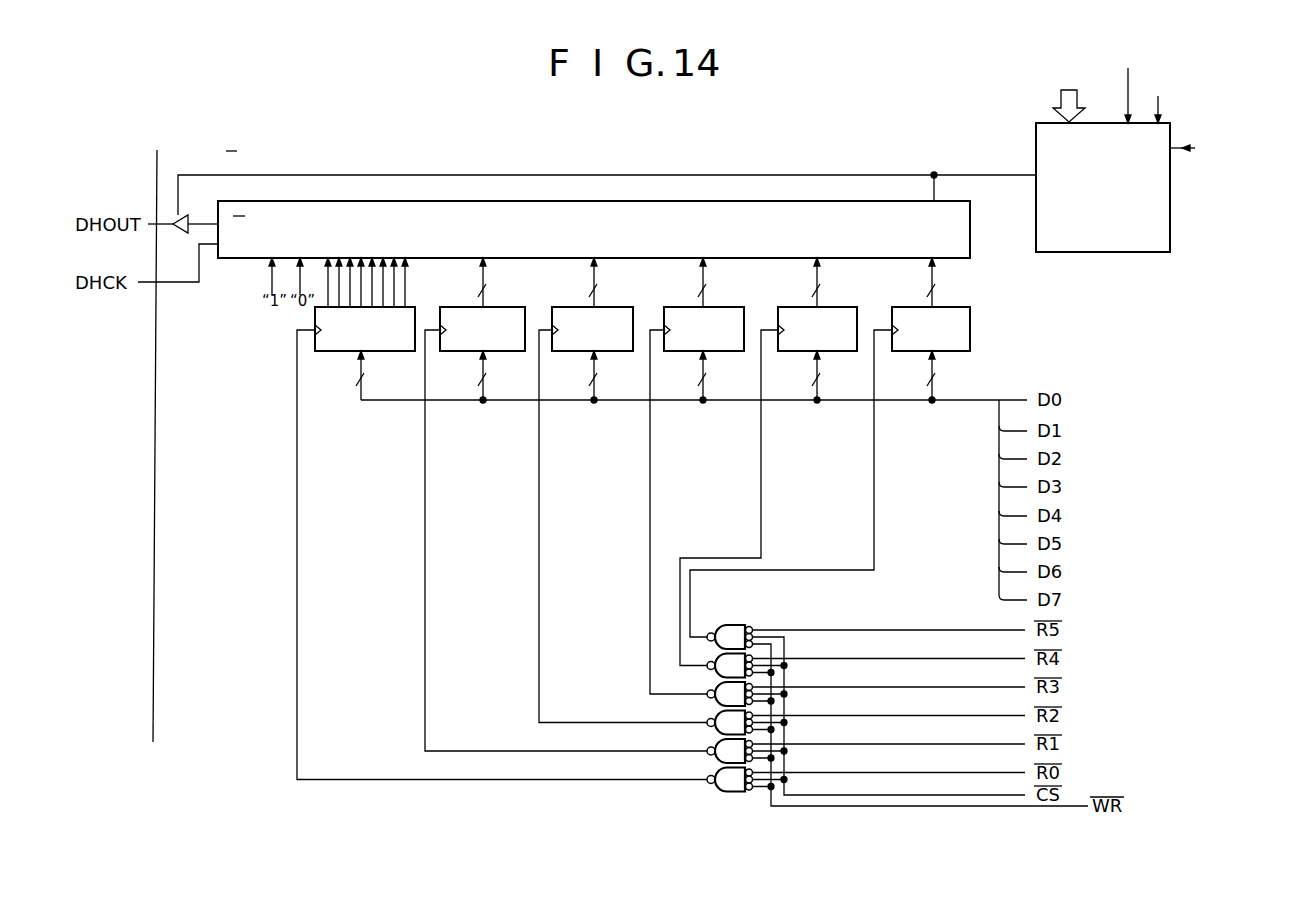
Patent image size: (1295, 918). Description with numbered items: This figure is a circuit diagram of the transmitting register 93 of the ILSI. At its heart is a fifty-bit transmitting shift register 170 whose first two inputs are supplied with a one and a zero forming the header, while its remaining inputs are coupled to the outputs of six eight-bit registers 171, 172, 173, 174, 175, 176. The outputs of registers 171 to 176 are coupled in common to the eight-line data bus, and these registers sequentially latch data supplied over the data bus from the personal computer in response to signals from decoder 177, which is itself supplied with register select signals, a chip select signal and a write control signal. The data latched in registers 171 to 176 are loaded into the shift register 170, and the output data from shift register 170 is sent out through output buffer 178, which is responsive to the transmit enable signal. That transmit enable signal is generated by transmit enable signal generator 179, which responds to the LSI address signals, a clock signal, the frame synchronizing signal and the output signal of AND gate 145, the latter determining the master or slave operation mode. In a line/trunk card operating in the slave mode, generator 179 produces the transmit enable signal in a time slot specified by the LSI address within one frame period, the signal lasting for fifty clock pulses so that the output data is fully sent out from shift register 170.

The transmitting register 93 is at (428, 167).
The 50-bit transmitting shift register 170 is at (828, 208).
The eight-bit register 171 is at (332, 353).
The eight-bit register 172 is at (457, 353).
The eight-bit register 173 is at (569, 353).
The eight-bit register 174 is at (681, 353).
The eight-bit register 175 is at (795, 353).
The eight-bit register 176 is at (909, 353).
The decoder 177 is at (745, 614).
The output buffer 178 is at (186, 236).
The transmit enable signal generator 179 is at (1140, 238).
The AND gate 145 is at (1221, 179).